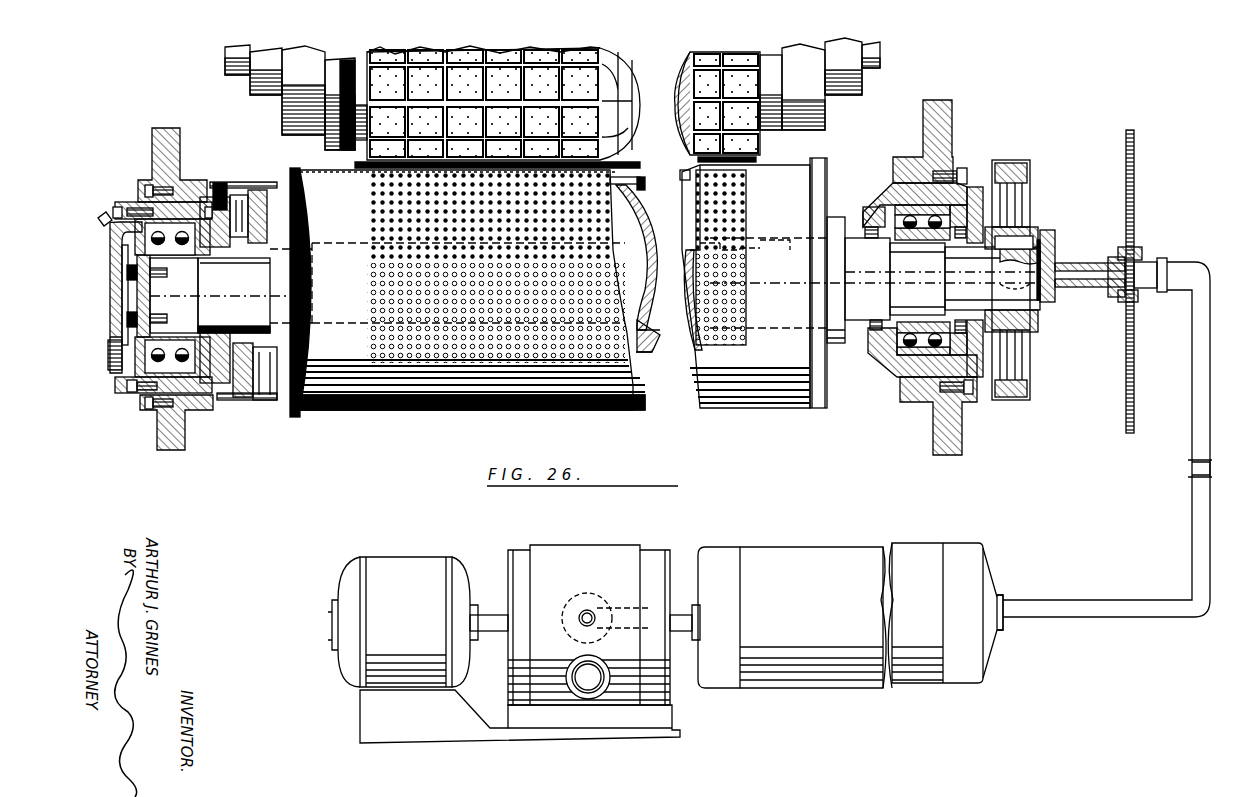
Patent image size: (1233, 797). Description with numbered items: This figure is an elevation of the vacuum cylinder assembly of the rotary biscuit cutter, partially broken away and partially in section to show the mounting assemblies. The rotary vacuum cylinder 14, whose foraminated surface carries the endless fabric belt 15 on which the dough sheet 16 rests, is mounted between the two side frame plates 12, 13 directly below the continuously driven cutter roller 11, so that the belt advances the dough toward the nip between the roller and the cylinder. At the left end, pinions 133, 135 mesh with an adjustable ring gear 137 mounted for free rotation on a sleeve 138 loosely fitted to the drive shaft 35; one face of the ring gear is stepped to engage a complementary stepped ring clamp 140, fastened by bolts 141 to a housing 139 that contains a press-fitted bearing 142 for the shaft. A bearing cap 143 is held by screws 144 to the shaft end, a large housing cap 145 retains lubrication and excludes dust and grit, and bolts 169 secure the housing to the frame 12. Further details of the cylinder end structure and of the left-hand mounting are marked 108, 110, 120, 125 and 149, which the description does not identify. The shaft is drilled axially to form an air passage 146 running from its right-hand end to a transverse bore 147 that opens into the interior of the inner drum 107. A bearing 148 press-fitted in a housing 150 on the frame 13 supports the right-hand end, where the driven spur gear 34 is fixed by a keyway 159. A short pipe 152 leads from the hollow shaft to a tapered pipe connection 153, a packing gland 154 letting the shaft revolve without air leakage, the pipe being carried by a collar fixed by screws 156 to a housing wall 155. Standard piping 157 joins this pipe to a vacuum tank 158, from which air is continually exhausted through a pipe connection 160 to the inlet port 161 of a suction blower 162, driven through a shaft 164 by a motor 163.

The cutter roller 11 is at (600, 82).
The side frame plate 12 is at (170, 428).
The side frame plate 13 is at (940, 132).
The rotary vacuum cylinder 14 is at (363, 410).
The endless fabric apron or belt 15 is at (612, 162).
The dough sheet 16 is at (352, 163).
The driven spur gear 34 is at (1032, 392).
The drive shaft 35 is at (180, 298).
The inner drum 107 is at (630, 230).
The ring 108 is at (622, 177).
The nut 110 is at (641, 180).
The band 120 is at (630, 398).
The flange 125 is at (835, 240).
The pinion 133 is at (258, 190).
The pinion 135 is at (266, 400).
The adjustable ring gear 137 is at (243, 350).
The sleeve 138 is at (218, 326).
The housing 139 is at (190, 180).
The stepped ring clamp 140 is at (217, 183).
The bolts 141 is at (238, 195).
The bearing 142 is at (138, 250).
The bearing cap 143 is at (140, 292).
The screws 144 is at (122, 322).
The housing cap 145 is at (128, 268).
The air passage 146 is at (1052, 223).
The transverse bore 147 is at (715, 243).
The bearing 148 is at (884, 366).
The housing 149 is at (130, 222).
The housing 150 is at (882, 203).
The pipe 152 is at (1075, 263).
The tapered pipe connection 153 is at (1115, 295).
The packing gland 154 is at (1052, 302).
The housing wall 155 is at (1128, 145).
The screws 156 is at (1140, 252).
The standard piping 157 is at (1190, 466).
The vacuum tank 158 is at (840, 688).
The keyway 159 is at (1022, 247).
The pipe connection 160 is at (680, 614).
The inlet port 161 is at (588, 595).
The suction blower 162 is at (670, 685).
The motor 163 is at (345, 678).
The shaft 164 is at (486, 614).
The bolts 169 is at (145, 403).